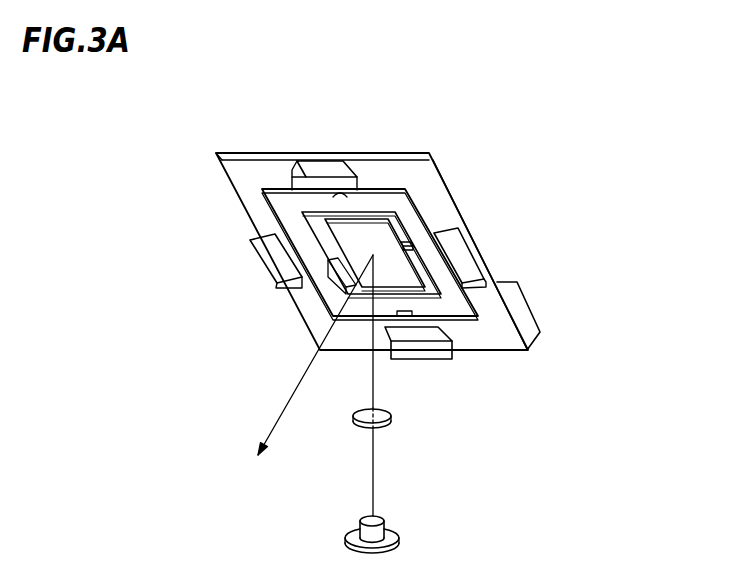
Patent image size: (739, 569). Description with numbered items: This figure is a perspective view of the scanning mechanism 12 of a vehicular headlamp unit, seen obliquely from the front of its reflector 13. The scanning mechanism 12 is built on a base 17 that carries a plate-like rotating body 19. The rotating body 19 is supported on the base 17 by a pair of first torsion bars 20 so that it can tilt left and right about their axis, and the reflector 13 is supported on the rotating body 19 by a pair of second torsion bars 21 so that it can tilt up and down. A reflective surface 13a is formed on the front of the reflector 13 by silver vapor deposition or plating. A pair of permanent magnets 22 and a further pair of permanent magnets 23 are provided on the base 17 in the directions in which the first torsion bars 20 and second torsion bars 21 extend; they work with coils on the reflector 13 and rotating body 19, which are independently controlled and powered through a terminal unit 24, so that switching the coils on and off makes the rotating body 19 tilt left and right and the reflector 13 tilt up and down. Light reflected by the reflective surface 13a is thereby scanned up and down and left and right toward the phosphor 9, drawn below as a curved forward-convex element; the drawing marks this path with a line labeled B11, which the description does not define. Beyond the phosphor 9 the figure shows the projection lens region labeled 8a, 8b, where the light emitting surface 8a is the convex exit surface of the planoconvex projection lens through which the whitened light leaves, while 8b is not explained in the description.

The scanning mechanism 12 is at (532, 353).
The base 17 is at (233, 155).
The rotating body 19 is at (467, 295).
The terminal unit 24 is at (530, 320).
The reflector 13 is at (425, 198).
The reflective surface 13a is at (367, 243).
The second torsion bars 21 is at (407, 243).
The permanent magnets 22 is at (456, 265).
The permanent magnets 23 is at (310, 175).
The first torsion bars 20 is at (333, 193).
The phosphor 9 is at (353, 432).
The optical axis B11 is at (414, 385).
The light emitting surface 8a is at (428, 538).
The light receiving element 8b is at (428, 538).